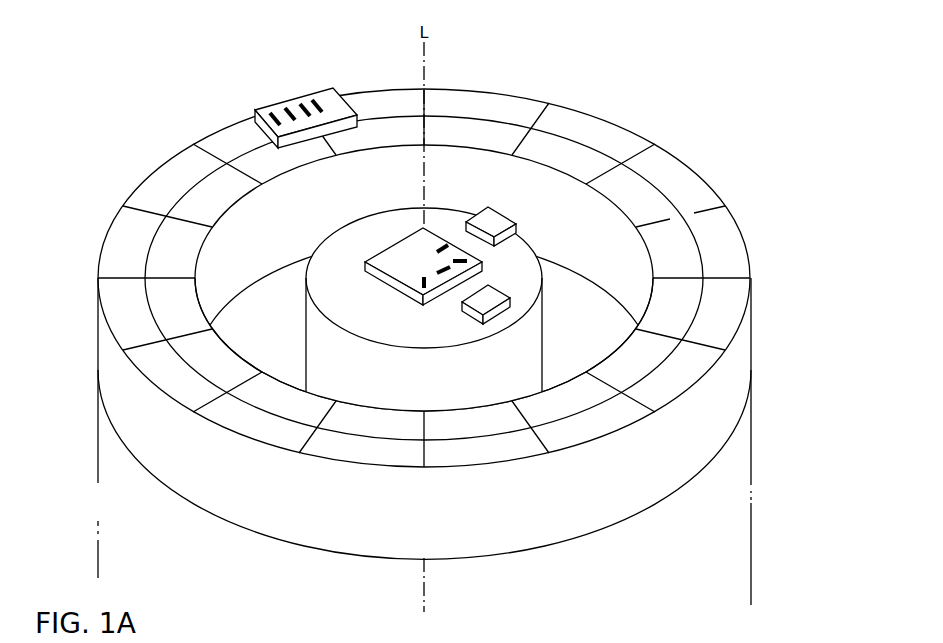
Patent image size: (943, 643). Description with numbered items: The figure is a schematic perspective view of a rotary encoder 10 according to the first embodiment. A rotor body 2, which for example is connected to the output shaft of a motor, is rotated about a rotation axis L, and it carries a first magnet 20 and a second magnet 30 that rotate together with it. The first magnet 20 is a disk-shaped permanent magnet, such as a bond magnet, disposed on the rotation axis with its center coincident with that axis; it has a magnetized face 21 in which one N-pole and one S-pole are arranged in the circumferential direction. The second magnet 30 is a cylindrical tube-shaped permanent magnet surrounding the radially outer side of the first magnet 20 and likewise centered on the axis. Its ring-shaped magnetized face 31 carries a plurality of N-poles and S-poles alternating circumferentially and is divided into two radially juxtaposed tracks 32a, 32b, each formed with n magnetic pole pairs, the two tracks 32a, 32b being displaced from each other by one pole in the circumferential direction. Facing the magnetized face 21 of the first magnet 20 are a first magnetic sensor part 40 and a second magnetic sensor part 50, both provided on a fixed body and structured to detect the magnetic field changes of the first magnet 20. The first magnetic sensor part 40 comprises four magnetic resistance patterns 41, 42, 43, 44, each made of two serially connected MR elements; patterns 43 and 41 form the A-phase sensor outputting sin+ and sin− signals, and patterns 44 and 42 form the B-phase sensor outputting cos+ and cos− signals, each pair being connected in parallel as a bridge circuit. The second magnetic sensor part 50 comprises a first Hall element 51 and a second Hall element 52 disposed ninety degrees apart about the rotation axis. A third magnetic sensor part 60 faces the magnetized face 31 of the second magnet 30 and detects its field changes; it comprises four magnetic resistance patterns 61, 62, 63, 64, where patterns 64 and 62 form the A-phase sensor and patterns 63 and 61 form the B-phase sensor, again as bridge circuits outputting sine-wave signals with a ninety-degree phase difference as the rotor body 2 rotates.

The rotary encoder 10 is at (732, 50).
The rotor body 2 is at (752, 548).
The first magnet 20 is at (388, 209).
The magnetized face 21 is at (458, 335).
The second magnet 30 is at (697, 167).
The magnetized face 31 is at (697, 229).
The track 32a is at (618, 140).
The track 32b is at (547, 143).
The first magnetic sensor part 40 is at (360, 253).
The magnetic resistance pattern 41 is at (437, 251).
The magnetic resistance pattern 42 is at (455, 261).
The magnetic resistance pattern 43 is at (440, 271).
The magnetic resistance pattern 44 is at (424, 285).
The second magnetic sensor part 50 is at (566, 192).
The first Hall element 51 is at (513, 210).
The second Hall element 52 is at (509, 281).
The third magnetic sensor part 60 is at (327, 85).
The magnetic resistance pattern 61 is at (315, 100).
The magnetic resistance pattern 62 is at (303, 103).
The magnetic resistance pattern 63 is at (287, 108).
The magnetic resistance pattern 64 is at (272, 113).